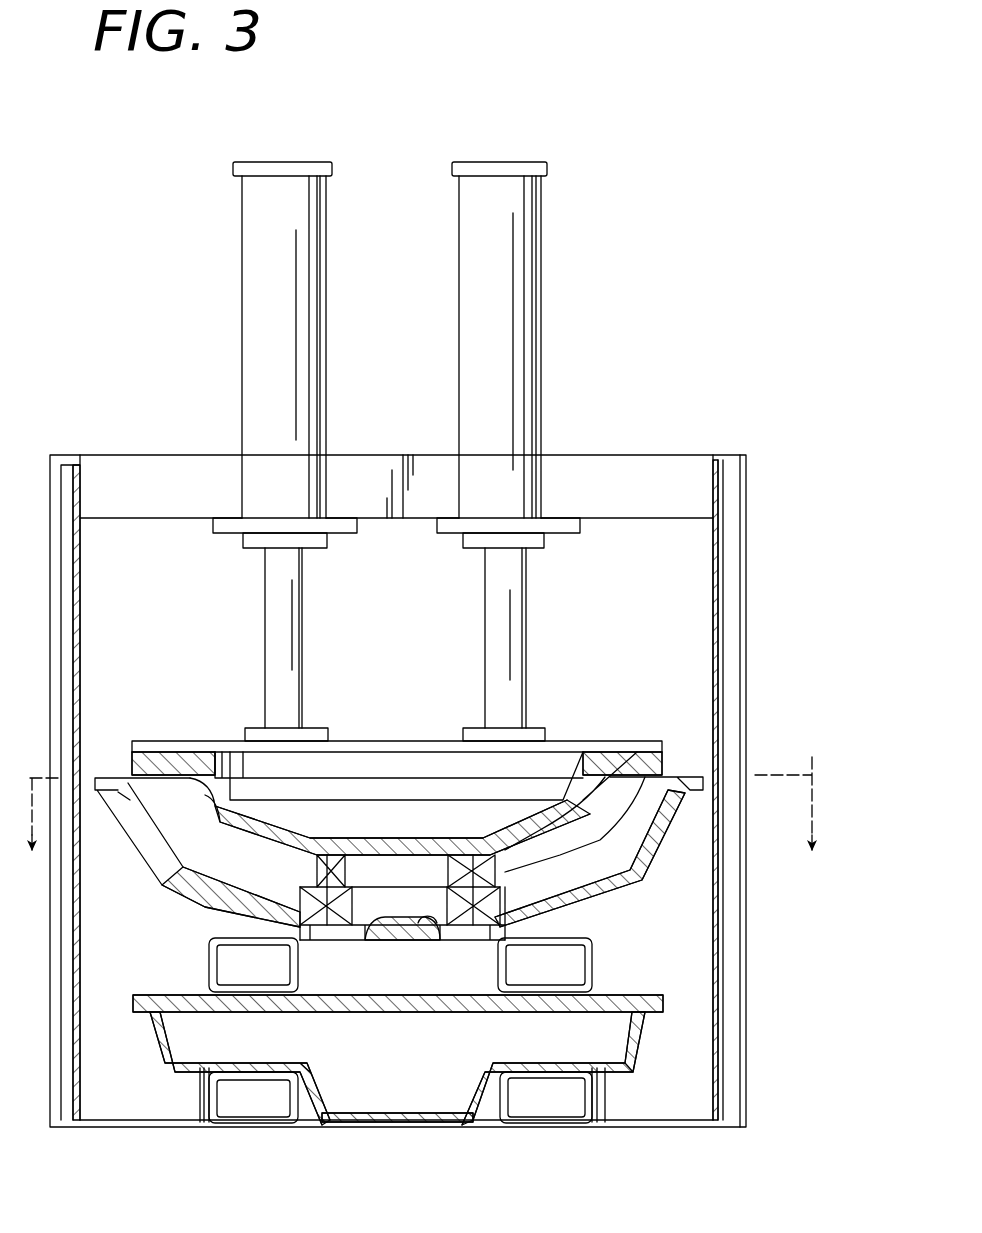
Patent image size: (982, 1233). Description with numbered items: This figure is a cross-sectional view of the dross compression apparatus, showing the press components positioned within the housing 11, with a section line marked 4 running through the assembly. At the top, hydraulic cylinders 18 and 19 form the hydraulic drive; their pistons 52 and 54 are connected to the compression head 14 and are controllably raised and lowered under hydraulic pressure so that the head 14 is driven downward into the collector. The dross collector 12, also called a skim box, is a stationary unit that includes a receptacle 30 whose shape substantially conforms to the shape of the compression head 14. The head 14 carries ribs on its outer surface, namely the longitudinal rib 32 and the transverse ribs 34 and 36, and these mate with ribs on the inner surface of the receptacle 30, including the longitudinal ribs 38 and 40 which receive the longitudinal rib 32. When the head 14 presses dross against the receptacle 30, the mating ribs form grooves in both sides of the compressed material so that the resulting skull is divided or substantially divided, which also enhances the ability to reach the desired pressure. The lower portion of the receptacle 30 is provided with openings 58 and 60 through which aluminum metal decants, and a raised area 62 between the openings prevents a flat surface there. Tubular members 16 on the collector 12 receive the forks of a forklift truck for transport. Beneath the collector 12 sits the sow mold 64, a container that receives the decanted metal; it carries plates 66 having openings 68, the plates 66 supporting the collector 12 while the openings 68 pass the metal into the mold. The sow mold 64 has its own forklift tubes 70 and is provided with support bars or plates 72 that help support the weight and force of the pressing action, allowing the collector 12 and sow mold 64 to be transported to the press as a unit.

The housing 11 is at (742, 545).
The hydraulic cylinder 18 is at (243, 315).
The hydraulic cylinder 19 is at (541, 297).
The piston 52 is at (304, 638).
The piston 54 is at (526, 638).
The compression head 14 is at (668, 750).
The longitudinal rib 38 is at (283, 915).
The longitudinal rib 32 is at (180, 895).
The receptacle 30 is at (597, 873).
The dross collector 12 is at (720, 770).
The longitudinal rib 40 is at (706, 778).
The transverse rib 34 is at (398, 826).
The transverse rib 36 is at (497, 873).
The opening 58 is at (323, 940).
The opening 60 is at (490, 927).
The raised area 62 is at (437, 932).
The tubular member 16 is at (209, 960).
The plate 66 is at (668, 1003).
The sow mold 64 is at (647, 1043).
The opening 68 is at (452, 1012).
The forklift tube 70 is at (250, 1125).
The support bar or plate 72 is at (200, 1100).
The section line 4- 4 is at (420, 826).